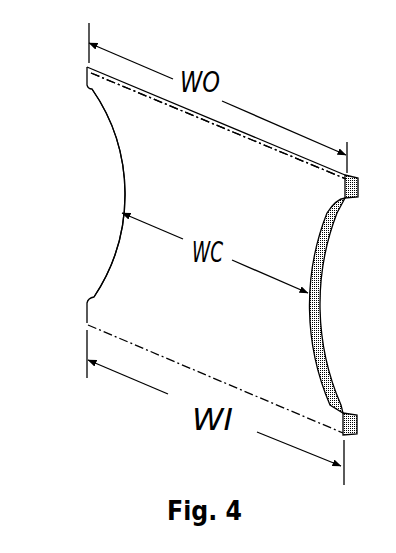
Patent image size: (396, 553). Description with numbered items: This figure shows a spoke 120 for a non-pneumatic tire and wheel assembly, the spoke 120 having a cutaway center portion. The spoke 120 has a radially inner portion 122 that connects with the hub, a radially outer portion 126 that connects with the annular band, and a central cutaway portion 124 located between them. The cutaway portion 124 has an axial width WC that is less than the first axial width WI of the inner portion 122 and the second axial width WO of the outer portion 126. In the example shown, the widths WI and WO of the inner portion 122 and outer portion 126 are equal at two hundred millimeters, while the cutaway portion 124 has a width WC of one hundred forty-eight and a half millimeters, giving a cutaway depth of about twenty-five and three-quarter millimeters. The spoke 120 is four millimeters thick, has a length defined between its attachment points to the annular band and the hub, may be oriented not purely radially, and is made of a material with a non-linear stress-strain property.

The spoke 120 is at (248, 100).
The radially inner portion 122 is at (140, 333).
The central cutaway portion 124 is at (267, 275).
The radially outer portion 126 is at (167, 112).